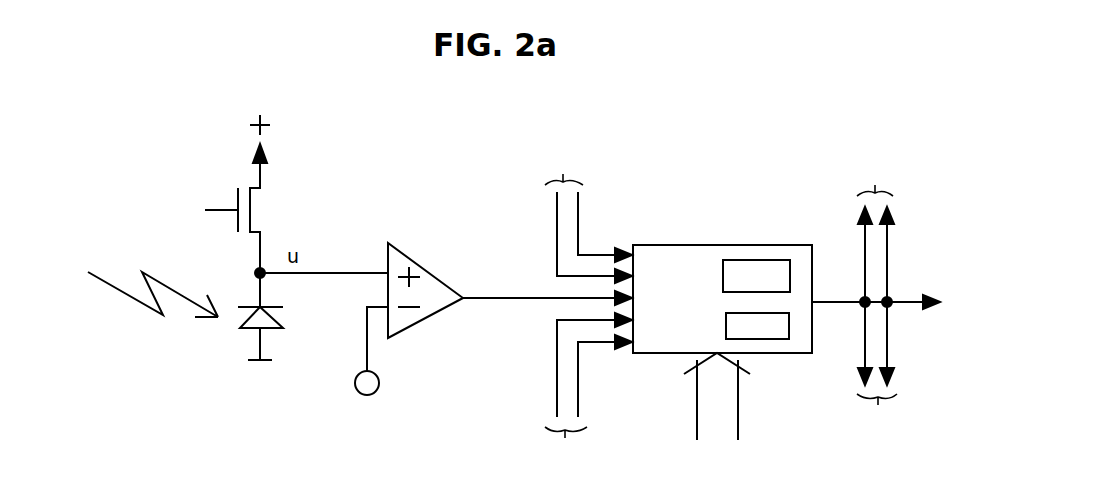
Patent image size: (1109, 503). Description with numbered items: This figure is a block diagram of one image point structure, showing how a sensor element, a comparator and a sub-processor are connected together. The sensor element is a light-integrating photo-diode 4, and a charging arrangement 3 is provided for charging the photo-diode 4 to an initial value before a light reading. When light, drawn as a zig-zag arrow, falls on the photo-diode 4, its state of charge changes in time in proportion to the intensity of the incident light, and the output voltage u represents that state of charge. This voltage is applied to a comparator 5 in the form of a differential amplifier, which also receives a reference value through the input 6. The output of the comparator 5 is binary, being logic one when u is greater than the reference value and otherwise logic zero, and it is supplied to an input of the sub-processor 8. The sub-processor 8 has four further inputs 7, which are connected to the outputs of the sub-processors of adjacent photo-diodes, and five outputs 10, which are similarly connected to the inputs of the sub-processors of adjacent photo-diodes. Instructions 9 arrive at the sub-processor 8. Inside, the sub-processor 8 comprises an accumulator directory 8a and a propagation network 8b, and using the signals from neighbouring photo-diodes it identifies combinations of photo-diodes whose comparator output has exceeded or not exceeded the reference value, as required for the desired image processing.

The charging arrangement 3 is at (212, 176).
The photo-diode 4 is at (240, 328).
The comparator 5 is at (398, 250).
The reference value input 6 is at (371, 365).
The inputs 7 is at (588, 304).
The sub-processor 8 is at (698, 245).
The accumulator directory 8a is at (765, 339).
The propagation network 8b is at (762, 260).
The instructions 9 is at (717, 411).
The outputs 10 is at (888, 296).